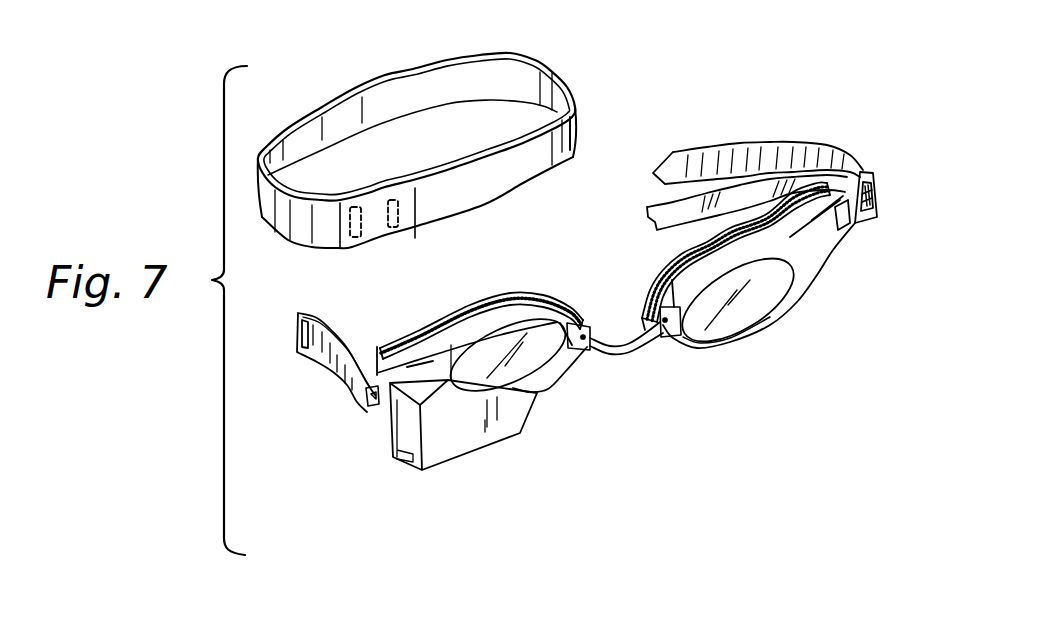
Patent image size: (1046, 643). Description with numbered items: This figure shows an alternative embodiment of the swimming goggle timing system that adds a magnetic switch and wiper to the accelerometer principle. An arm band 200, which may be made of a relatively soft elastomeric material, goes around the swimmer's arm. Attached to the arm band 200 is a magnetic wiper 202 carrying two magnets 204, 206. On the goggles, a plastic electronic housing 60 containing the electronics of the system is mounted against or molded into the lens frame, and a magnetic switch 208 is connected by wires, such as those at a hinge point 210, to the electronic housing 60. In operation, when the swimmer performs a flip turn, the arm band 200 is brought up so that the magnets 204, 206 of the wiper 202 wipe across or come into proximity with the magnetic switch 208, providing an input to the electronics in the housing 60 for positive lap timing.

The arm band 200 is at (500, 71).
The magnetic wiper 202 is at (401, 239).
The magnet 204 is at (352, 238).
The magnet 206 is at (399, 203).
The magnetic switch 208 is at (338, 383).
The hinge point 210 is at (388, 415).
The electronic housing 60 is at (503, 420).